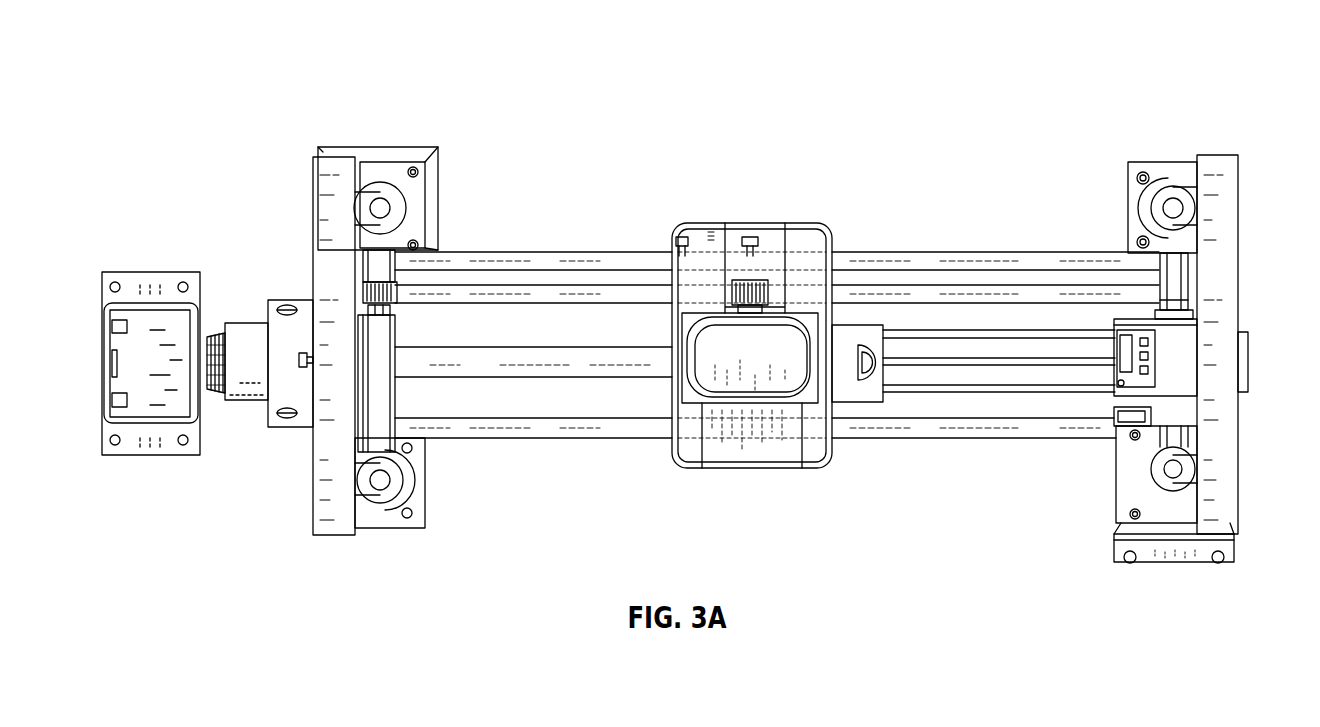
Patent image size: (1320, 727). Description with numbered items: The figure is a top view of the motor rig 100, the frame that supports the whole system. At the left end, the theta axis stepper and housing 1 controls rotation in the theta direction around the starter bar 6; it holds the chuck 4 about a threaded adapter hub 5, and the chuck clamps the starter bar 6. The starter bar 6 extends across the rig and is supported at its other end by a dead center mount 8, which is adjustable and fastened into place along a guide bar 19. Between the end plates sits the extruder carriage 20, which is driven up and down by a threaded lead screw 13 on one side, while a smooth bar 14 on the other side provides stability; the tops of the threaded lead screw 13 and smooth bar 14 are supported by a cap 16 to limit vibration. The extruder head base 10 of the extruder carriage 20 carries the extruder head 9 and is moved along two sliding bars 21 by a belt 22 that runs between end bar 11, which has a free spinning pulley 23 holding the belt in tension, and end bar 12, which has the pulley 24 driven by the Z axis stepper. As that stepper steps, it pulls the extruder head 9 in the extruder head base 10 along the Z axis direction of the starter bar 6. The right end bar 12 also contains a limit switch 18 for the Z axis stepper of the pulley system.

The motor rig 100 is at (183, 72).
The theta axis stepper and housing 1 is at (132, 327).
The chuck 4 is at (240, 332).
The threaded adapter hub 5 is at (213, 395).
The starter bar 6 is at (515, 361).
The dead center mount 8 is at (850, 366).
The extruder head 9 is at (727, 352).
The extruder head base 10 is at (685, 450).
The end bar 11 is at (380, 403).
The end bar 12 is at (1185, 280).
The threaded lead screw 13 is at (380, 208).
The smooth bar 14 is at (380, 480).
The cap 16 is at (323, 190).
The limit switch 18 is at (1160, 365).
The guide bar 19 is at (995, 378).
The extruder carriage 20 is at (618, 229).
The sliding bars 21 is at (890, 258).
The belt 22 is at (950, 292).
The free spinning pulley 23 is at (362, 292).
The pulley 24 is at (1140, 278).